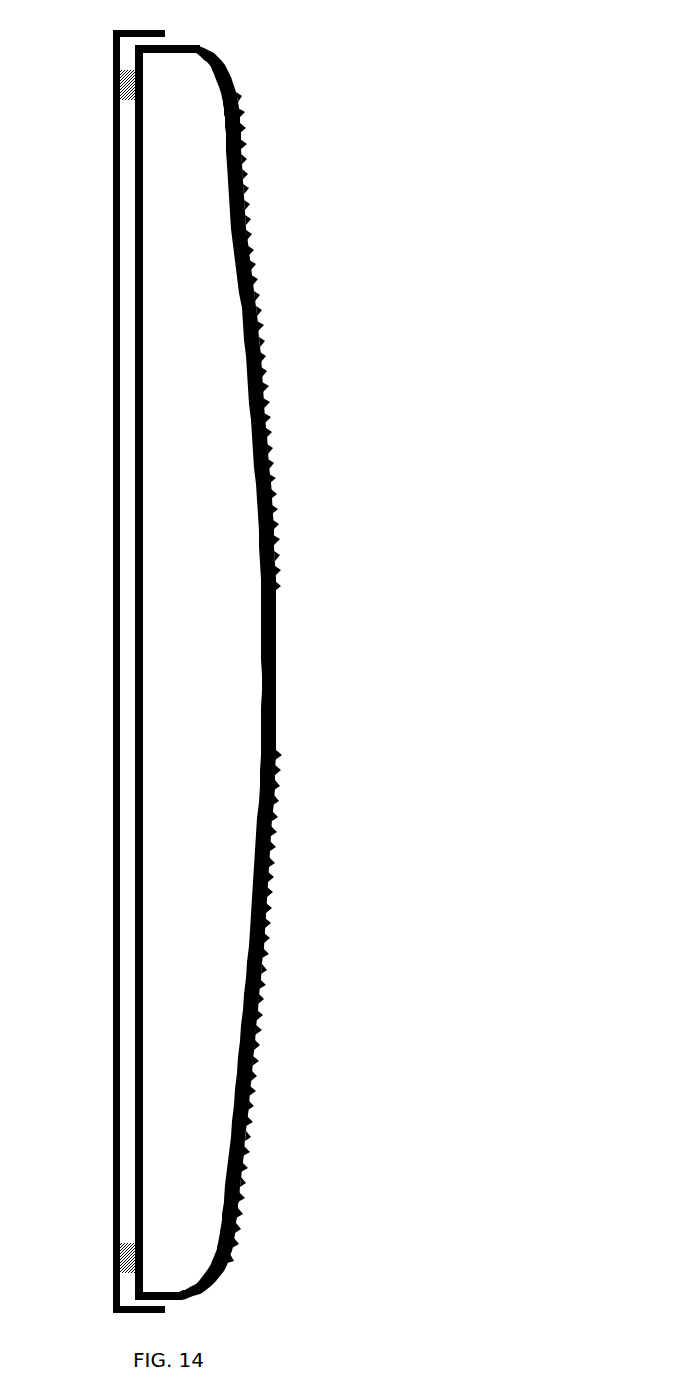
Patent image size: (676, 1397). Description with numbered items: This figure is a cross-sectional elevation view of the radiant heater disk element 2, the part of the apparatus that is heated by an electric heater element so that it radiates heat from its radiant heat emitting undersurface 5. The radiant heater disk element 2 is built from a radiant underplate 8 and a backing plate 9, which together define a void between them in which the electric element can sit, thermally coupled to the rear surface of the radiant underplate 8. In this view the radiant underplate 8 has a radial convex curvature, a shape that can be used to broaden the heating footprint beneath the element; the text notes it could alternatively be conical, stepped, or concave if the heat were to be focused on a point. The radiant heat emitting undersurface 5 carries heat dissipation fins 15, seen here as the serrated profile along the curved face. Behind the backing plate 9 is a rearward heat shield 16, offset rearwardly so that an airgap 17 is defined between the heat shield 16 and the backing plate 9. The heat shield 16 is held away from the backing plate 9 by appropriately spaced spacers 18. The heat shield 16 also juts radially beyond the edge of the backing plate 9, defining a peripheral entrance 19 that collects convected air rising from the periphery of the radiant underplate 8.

The radiant heater disk element 2 is at (488, 100).
The radiant heat emitting undersurface 5 is at (366, 527).
The radiant underplate 8 is at (214, 1288).
The backing plate 9 is at (143, 934).
The heat dissipation fins 15 is at (271, 946).
The rearward heat shield 16 is at (119, 1048).
The airgap 17 is at (130, 1097).
The spacers 18 is at (119, 1247).
The peripheral entrance 19 is at (205, 1308).